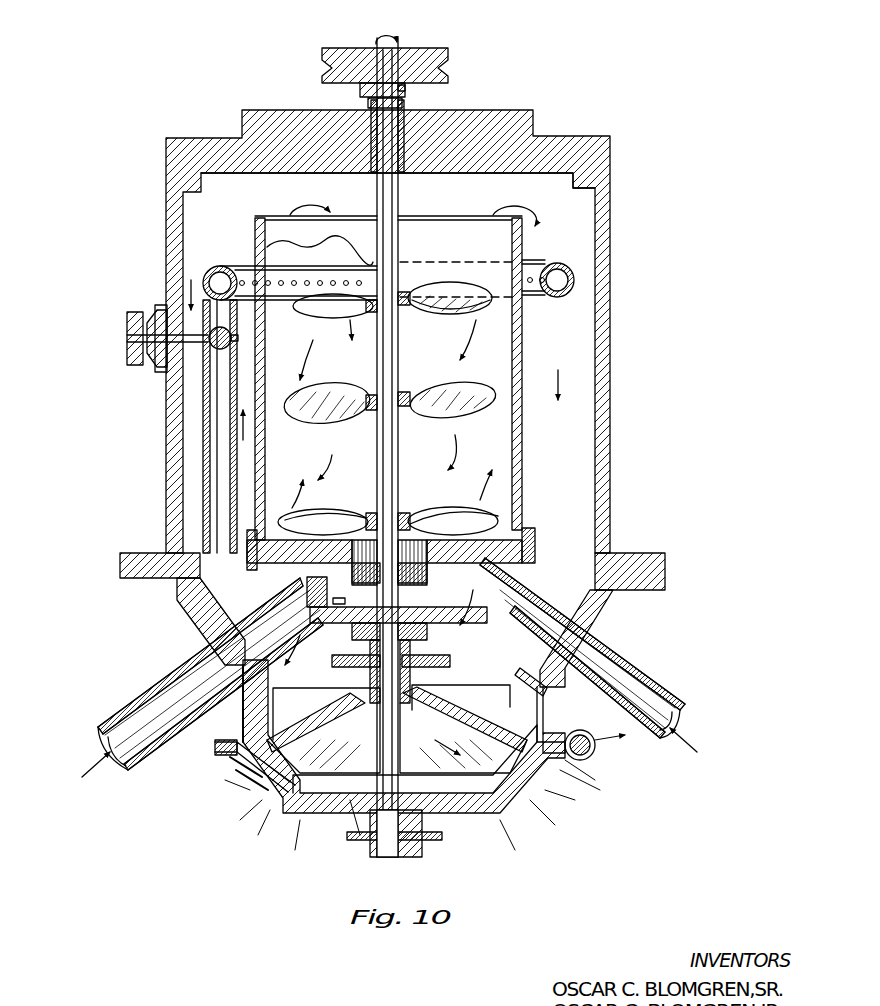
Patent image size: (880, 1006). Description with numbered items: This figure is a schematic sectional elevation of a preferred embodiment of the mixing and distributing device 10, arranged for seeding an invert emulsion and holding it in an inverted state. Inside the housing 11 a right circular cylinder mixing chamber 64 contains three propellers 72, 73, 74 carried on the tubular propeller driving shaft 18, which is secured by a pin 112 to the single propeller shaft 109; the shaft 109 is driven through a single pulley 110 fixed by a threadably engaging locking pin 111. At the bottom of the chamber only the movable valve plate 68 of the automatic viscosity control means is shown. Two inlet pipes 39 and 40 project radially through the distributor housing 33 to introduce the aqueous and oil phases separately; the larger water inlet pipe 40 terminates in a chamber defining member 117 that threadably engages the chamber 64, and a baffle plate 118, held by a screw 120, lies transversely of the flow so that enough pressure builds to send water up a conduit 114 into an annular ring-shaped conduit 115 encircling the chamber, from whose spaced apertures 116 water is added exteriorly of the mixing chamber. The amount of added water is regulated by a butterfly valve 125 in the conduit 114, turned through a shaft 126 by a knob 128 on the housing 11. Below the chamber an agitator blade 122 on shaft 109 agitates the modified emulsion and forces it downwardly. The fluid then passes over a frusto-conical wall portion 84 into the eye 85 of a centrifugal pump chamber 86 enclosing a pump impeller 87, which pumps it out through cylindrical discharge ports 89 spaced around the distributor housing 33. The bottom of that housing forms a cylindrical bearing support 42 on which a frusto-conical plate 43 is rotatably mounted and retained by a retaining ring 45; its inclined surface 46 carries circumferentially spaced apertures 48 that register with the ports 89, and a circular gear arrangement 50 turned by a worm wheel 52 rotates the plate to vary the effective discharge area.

The mixing and distributing device 10 is at (652, 333).
The housing 11 is at (612, 430).
The tubular shaft 18 is at (403, 208).
The distributor housing 33 is at (252, 718).
The inlet pipe 39 is at (645, 685).
The inlet pipe 40 is at (110, 722).
The cylindrical bearing support 42 is at (416, 850).
The frusto-conical plate 43 is at (484, 812).
The retaining ring 45 is at (330, 810).
The inclined surface 46 is at (542, 765).
The apertures 48 is at (258, 792).
The circular gear arrangement 50 is at (557, 733).
The worm wheel 52 is at (596, 746).
The mixing chamber 64 is at (558, 350).
The valve plate 68 is at (357, 540).
The impeller 72 is at (435, 527).
The impeller 73 is at (440, 392).
The impeller 74 is at (440, 283).
The frusto-conical wall portion 84 is at (362, 688).
The eye 85 is at (420, 690).
The centrifugal pump chamber 86 is at (480, 720).
The impeller 87 is at (318, 727).
The discharge ports 89 is at (280, 763).
The propeller shaft 109 is at (381, 40).
The pulley 110 is at (428, 48).
The locking pin 111 is at (406, 88).
The pin 112 is at (368, 104).
The conduit 114 is at (205, 448).
The annular ring-shaped conduit 115 is at (237, 264).
The apertures 116 is at (560, 272).
The chamber defining member 117 is at (455, 623).
The baffle plate 118 is at (316, 588).
The screw 120 is at (336, 600).
The agitator blade 122 is at (342, 655).
The butterfly valve 125 is at (216, 347).
The shaft 126 is at (155, 366).
The knob 128 is at (128, 352).